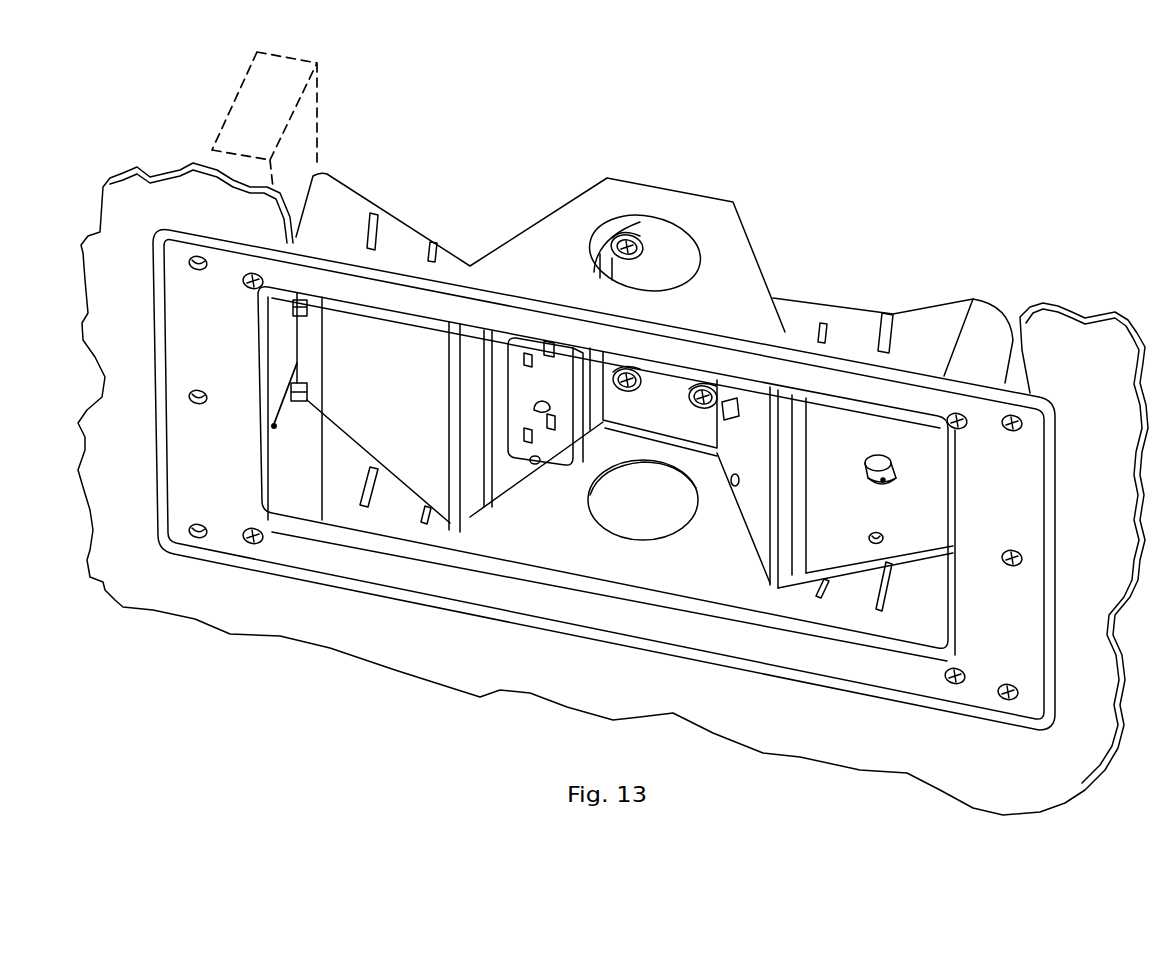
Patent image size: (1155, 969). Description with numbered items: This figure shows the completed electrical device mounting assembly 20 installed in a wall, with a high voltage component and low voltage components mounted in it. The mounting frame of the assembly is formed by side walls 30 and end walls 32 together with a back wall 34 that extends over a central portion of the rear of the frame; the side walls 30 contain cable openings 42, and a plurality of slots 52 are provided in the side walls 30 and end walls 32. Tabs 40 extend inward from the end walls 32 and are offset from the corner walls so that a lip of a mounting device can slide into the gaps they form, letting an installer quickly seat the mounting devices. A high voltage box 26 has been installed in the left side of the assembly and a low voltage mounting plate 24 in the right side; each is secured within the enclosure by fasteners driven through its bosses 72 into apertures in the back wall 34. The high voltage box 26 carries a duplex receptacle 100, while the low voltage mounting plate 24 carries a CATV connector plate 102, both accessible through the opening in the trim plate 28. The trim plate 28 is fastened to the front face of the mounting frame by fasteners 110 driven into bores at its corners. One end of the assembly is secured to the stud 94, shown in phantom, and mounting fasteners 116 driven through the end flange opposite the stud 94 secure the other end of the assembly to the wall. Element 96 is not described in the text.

The electrical device mounting assembly 20 is at (833, 219).
The low voltage mounting plate 24 is at (877, 565).
The high voltage box 26 is at (452, 520).
The trim plate 28 is at (913, 705).
The side wall 30 is at (741, 300).
The end wall 32 is at (297, 343).
The back wall 34 is at (678, 403).
The tab 40 is at (309, 396).
The cable opening 42 is at (654, 512).
The slot 52 is at (292, 390).
The boss 72 is at (637, 231).
The stud 94 is at (302, 133).
The pivot rivet 96 is at (277, 429).
The duplex receptacle 100 is at (554, 393).
The CATV connector plate 102 is at (893, 519).
The fastener 110 is at (251, 544).
The mounting fastener 116 is at (1008, 701).